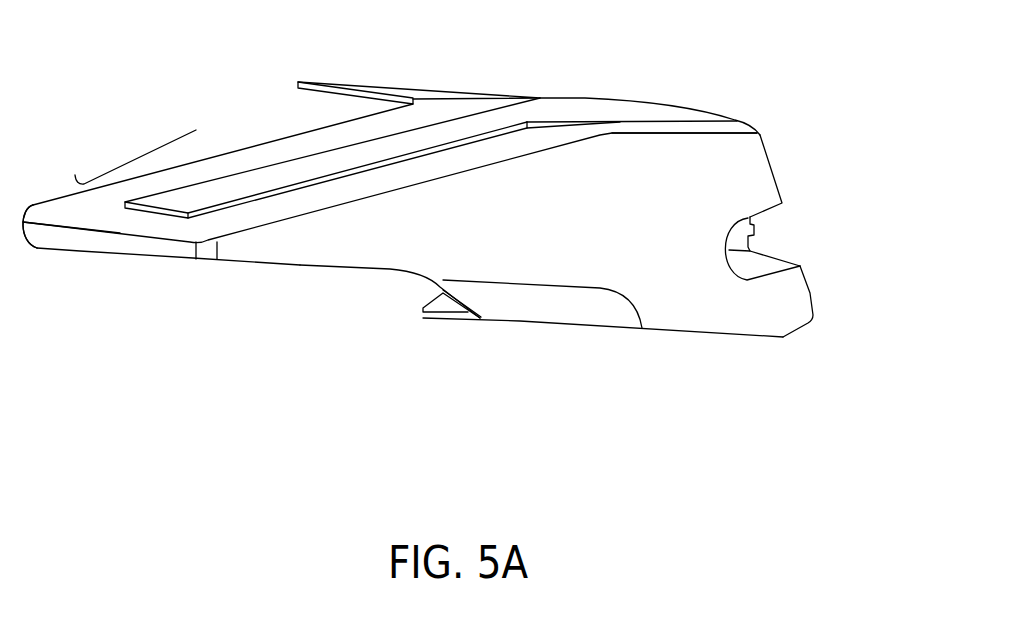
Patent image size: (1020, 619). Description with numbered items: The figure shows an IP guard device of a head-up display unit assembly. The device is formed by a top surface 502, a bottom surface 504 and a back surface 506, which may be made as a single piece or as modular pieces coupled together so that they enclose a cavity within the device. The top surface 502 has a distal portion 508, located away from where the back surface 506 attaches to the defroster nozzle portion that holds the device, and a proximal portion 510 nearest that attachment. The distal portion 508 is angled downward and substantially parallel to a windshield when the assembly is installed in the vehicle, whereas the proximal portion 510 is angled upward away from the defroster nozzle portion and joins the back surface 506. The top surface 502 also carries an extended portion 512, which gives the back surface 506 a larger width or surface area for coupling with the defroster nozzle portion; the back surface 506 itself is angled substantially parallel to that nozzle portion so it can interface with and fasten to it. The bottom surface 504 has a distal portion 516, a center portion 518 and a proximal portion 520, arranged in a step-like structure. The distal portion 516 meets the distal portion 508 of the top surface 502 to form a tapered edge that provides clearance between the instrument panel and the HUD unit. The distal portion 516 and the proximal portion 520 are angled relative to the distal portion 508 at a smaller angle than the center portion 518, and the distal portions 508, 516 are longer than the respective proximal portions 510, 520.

The top surface 502 is at (152, 197).
The bottom surface 504 is at (315, 266).
The back surface 506 is at (779, 178).
The distal portion of the top surface 508 is at (330, 117).
The proximal portion of the top surface 510 is at (734, 106).
The extended portion 512 is at (425, 88).
The distal portion of the bottom surface 516 is at (422, 318).
The center portion of the bottom surface 518 is at (490, 295).
The proximal portion of the bottom surface 520 is at (773, 346).